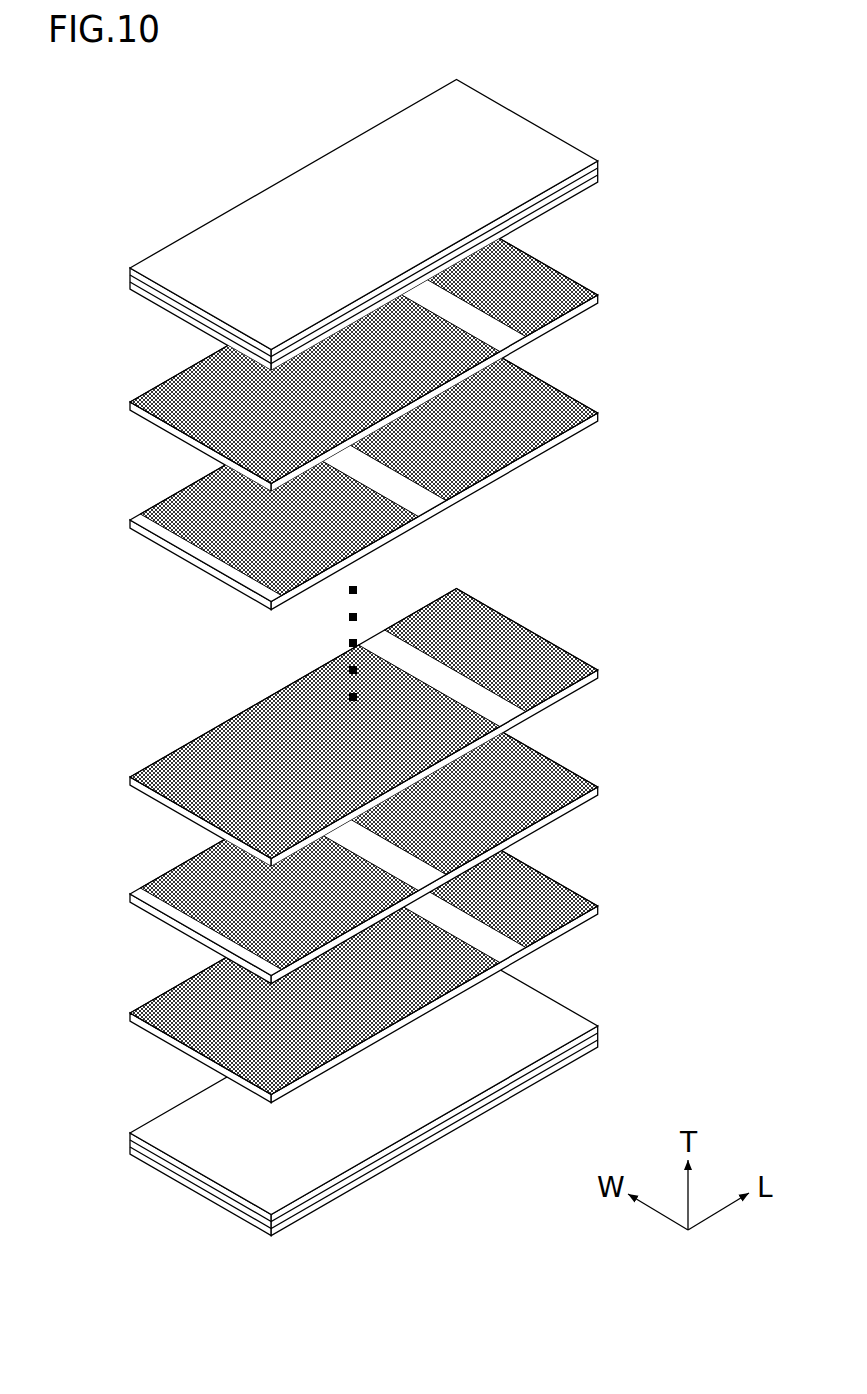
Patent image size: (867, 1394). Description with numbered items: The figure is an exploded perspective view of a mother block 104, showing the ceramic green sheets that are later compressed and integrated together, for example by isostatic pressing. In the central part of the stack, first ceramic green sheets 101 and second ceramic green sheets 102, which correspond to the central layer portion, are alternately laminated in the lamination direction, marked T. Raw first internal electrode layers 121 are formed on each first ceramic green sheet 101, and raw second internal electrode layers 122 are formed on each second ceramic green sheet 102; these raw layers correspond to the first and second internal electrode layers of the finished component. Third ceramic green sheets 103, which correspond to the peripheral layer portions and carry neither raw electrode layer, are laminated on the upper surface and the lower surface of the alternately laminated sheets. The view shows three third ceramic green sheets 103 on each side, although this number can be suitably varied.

The mother block 104 is at (173, 122).
The third ceramic green sheet 103 is at (663, 107).
The first ceramic green sheet 101 is at (663, 241).
The second ceramic green sheet 102 is at (663, 361).
The raw first internal electrode layer 121 is at (179, 386).
The raw second internal electrode layer 122 is at (174, 503).